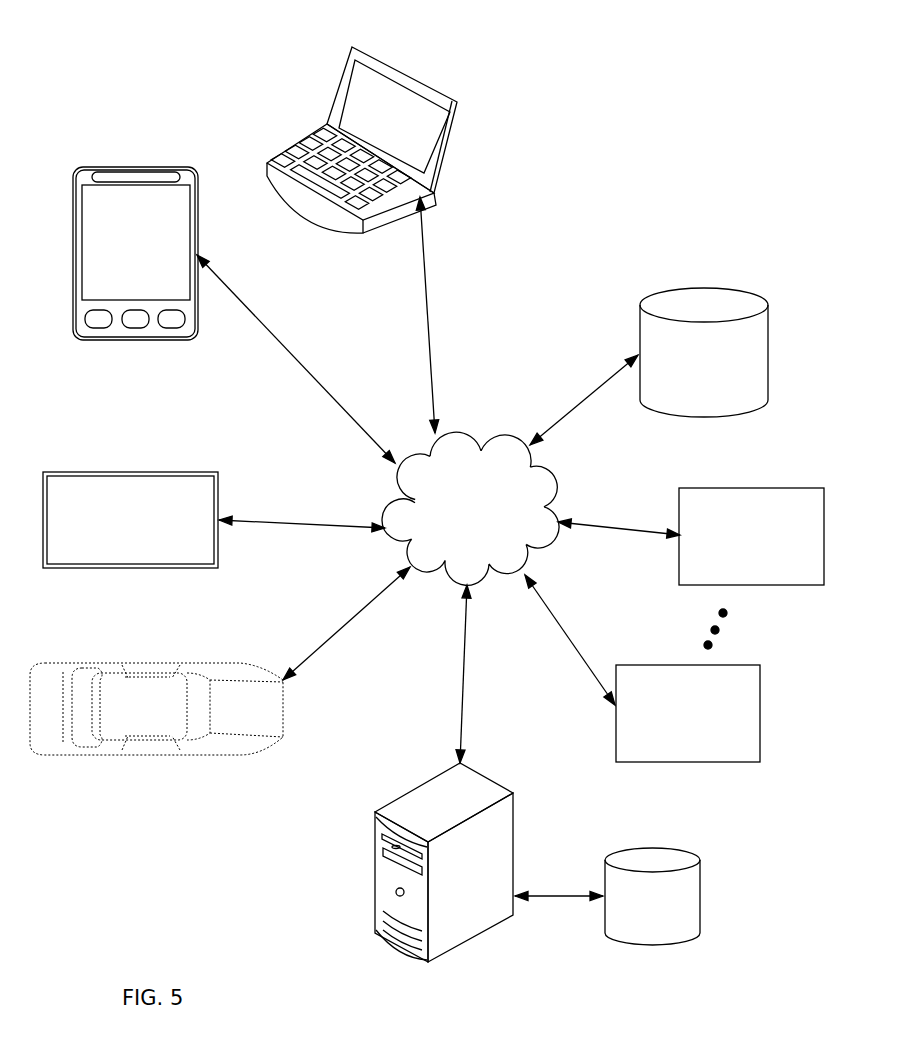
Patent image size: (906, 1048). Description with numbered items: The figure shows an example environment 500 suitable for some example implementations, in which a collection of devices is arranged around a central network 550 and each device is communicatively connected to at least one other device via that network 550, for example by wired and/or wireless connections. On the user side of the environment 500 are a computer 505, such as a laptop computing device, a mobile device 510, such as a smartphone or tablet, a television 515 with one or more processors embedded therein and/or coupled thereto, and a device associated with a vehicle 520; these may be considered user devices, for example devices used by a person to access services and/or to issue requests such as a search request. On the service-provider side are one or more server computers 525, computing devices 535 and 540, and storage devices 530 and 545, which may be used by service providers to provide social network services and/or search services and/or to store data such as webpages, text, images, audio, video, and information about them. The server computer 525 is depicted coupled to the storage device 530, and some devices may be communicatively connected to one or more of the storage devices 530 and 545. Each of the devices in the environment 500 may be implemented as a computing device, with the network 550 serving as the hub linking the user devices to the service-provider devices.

The environment 500 is at (149, 44).
The computer 505 is at (362, 140).
The mobile device 510 is at (135, 253).
The television 515 is at (130, 520).
The vehicle 520 is at (156, 709).
The server computer 525 is at (444, 862).
The storage device 530 is at (652, 896).
The computing device 535 is at (688, 713).
The computing device 540 is at (751, 536).
The storage device 545 is at (704, 352).
The network 550 is at (470, 508).